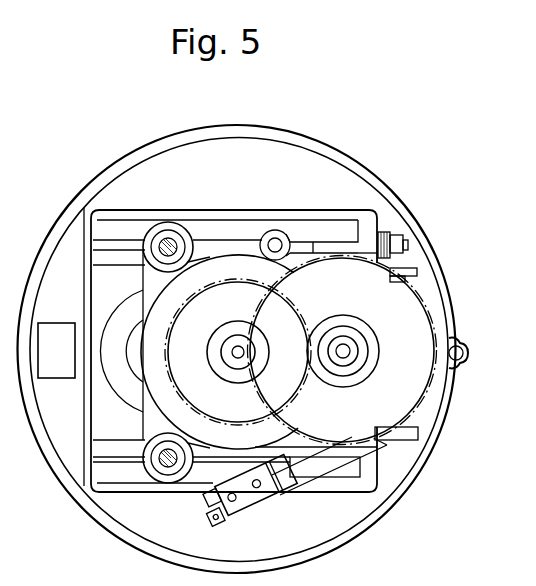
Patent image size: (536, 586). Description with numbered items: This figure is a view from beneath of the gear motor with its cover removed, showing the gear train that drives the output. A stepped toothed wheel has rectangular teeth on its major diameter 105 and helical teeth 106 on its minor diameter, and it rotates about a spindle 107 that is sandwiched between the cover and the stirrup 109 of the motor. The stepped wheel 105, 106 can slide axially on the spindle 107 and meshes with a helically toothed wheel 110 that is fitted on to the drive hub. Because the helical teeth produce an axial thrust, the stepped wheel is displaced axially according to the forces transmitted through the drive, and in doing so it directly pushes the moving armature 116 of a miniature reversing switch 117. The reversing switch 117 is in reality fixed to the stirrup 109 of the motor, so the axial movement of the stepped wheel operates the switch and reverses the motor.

The major diameter of stepped toothed wheel 105 is at (408, 312).
The helical teeth on minor diameter of stepped toothed wheel 106 is at (370, 368).
The spindle 107 is at (338, 364).
The stirrup 109 is at (388, 263).
The helically toothed wheel 110 is at (214, 297).
The moving armature 116 is at (316, 470).
The miniature reversing switch 117 is at (253, 500).